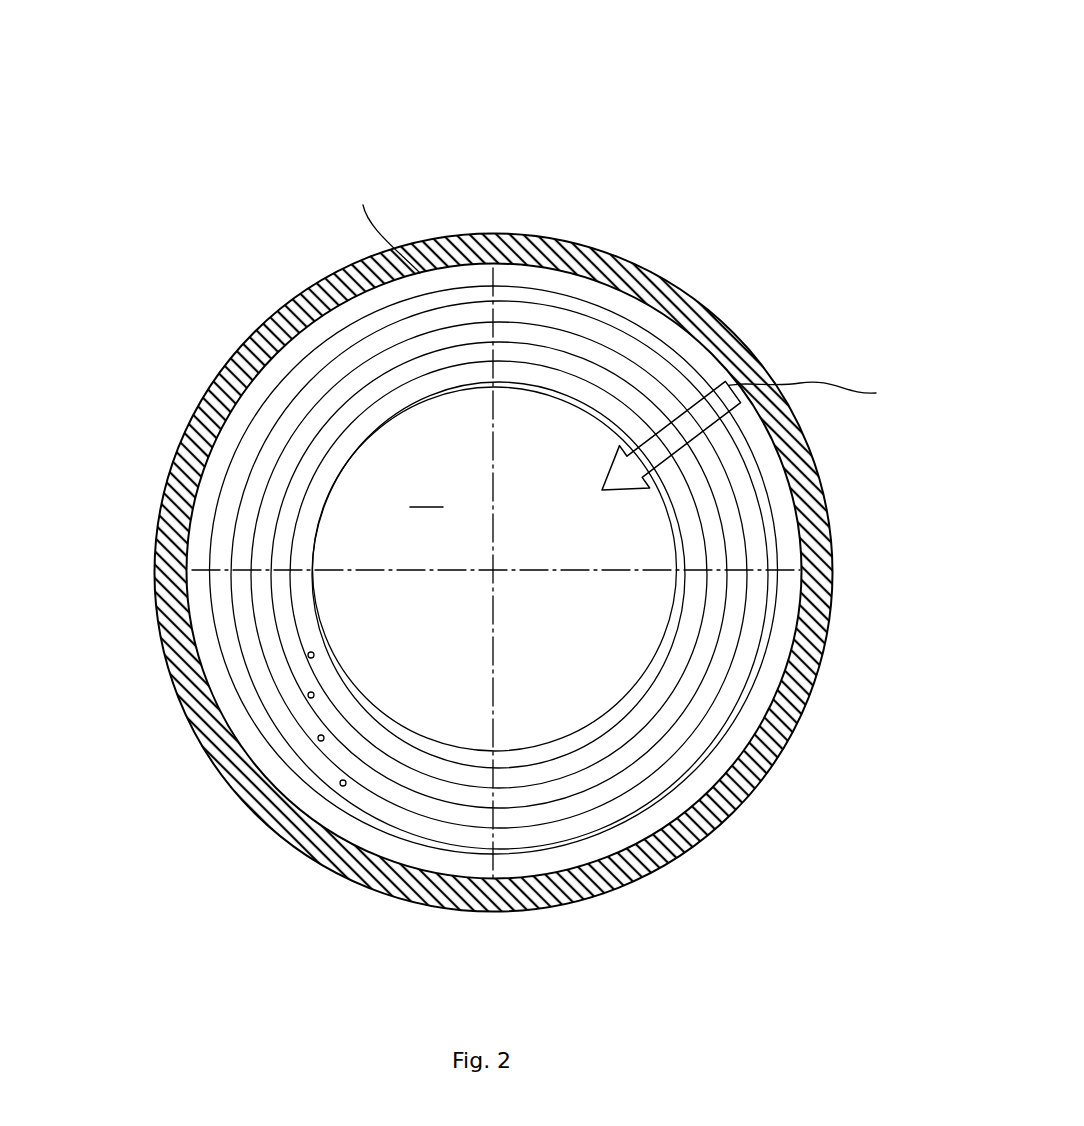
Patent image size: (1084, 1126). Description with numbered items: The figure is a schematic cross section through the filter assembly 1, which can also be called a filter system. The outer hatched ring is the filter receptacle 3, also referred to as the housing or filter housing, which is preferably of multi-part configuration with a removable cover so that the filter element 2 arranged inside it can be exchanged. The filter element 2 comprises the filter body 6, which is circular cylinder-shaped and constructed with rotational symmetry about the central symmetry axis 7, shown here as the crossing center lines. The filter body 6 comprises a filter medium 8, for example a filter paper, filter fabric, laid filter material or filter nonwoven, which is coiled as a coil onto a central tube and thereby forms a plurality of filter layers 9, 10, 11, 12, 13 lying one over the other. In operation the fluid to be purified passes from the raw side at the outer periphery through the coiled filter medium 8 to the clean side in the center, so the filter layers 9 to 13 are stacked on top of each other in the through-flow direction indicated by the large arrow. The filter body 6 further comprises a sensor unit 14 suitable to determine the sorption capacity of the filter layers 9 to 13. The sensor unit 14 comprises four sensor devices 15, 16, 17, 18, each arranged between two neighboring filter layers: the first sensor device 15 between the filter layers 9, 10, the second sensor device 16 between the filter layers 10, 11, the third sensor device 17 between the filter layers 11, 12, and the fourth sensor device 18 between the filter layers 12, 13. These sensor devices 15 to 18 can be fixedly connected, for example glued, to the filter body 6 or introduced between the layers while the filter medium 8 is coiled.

The filter assembly 1 is at (484, 82).
The filter element 2 is at (577, 665).
The filter receptacle 3 is at (617, 251).
The filter body 6 is at (352, 298).
The symmetry axis 7 is at (493, 570).
The filter medium 8 is at (97, 318).
The filter layer 9 is at (300, 553).
The filter layer 10 is at (290, 505).
The filter layer 11 is at (288, 459).
The filter layer 12 is at (290, 420).
The filter layer 13 is at (285, 377).
The sensor unit 14 is at (97, 655).
The first sensor device 15 is at (308, 657).
The second sensor device 16 is at (308, 697).
The third sensor device 17 is at (318, 740).
The fourth sensor device 18 is at (340, 784).